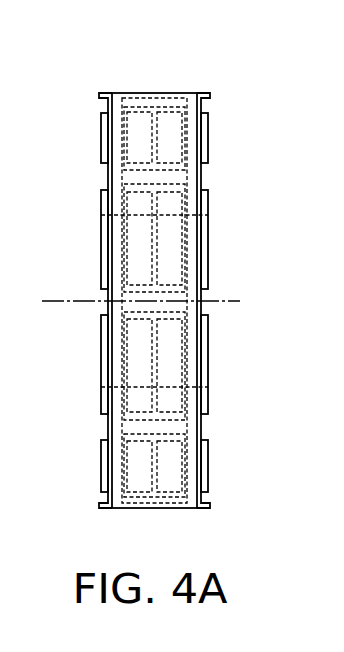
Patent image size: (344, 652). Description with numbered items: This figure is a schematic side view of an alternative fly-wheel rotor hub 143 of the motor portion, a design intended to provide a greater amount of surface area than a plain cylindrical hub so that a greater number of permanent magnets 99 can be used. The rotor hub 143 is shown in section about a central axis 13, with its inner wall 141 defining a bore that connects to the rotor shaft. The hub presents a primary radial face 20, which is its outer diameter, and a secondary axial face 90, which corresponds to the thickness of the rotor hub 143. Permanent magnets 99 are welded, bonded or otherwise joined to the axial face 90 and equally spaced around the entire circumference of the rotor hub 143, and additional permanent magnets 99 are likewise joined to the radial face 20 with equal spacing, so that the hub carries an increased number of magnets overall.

The central axis 13 is at (80, 300).
The primary radial face 20 is at (203, 425).
The secondary axial face 90 is at (117, 342).
The permanent magnets 99 is at (168, 110).
The inner wall 141 is at (192, 216).
The fly-wheel rotor hub 143 is at (203, 528).